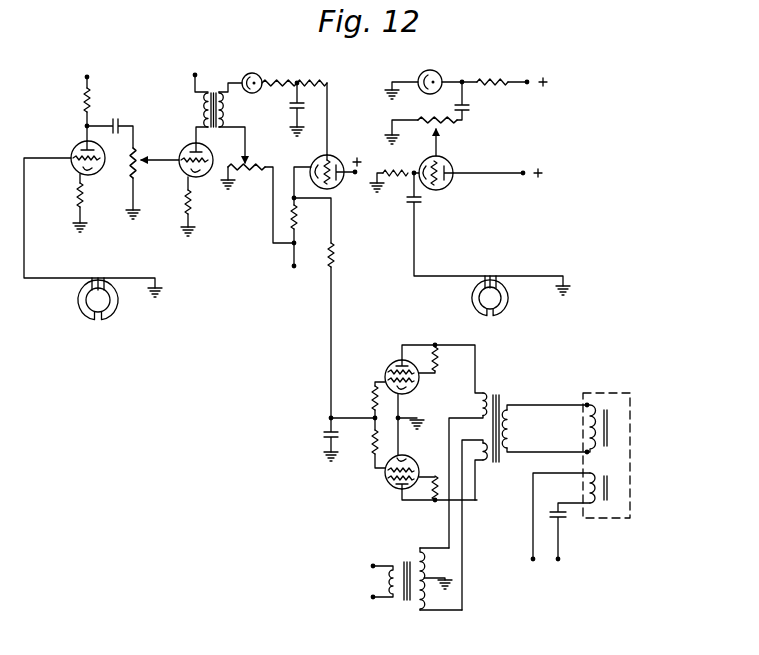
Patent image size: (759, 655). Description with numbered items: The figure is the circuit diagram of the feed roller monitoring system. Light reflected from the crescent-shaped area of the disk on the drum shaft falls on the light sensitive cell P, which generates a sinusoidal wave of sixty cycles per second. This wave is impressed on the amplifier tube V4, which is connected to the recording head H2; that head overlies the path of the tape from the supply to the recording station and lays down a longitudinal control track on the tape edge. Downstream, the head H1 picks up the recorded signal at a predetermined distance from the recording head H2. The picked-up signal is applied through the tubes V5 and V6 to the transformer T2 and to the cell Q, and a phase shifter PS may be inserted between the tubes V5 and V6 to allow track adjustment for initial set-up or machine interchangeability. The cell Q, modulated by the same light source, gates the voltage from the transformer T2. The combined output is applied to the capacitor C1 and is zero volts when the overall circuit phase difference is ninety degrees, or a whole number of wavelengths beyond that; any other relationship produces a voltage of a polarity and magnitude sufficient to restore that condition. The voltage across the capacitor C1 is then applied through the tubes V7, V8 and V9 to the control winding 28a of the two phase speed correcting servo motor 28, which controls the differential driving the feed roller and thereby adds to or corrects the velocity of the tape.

The tube V5 is at (75, 141).
The tube V6 is at (181, 141).
The phase shifter PS is at (149, 170).
The head H1 is at (83, 321).
The transformer T2 is at (213, 90).
The light sensitive cell Q is at (256, 74).
The capacitor C1 is at (289, 106).
The tube V7 is at (339, 157).
The light sensitive cell P is at (429, 70).
The amplifier tube V4 is at (454, 164).
The recording head H2 is at (471, 300).
The tube V8 is at (386, 361).
The tube V9 is at (384, 492).
The control winding 28a is at (583, 423).
The two phase servo motor 28 is at (583, 462).